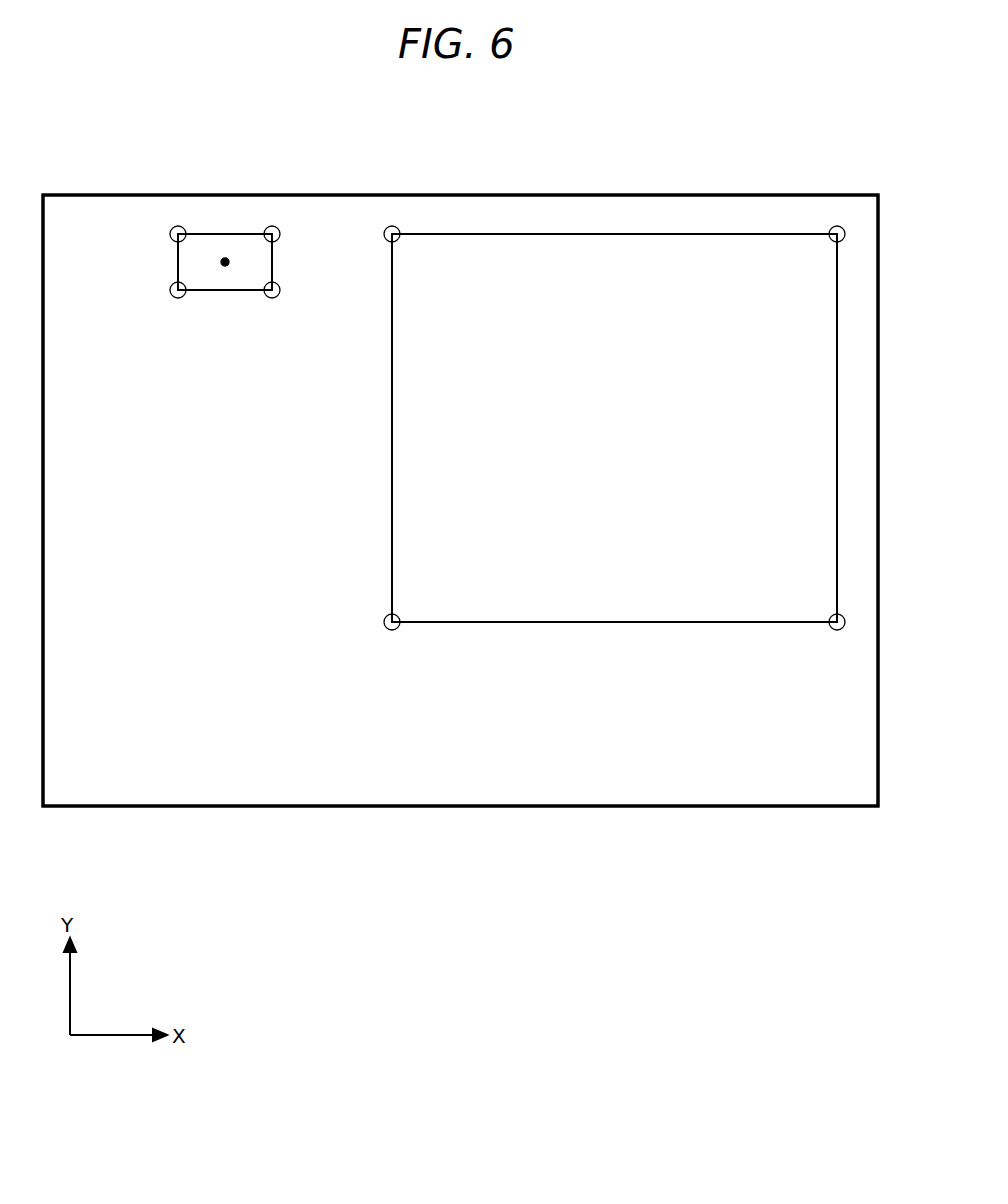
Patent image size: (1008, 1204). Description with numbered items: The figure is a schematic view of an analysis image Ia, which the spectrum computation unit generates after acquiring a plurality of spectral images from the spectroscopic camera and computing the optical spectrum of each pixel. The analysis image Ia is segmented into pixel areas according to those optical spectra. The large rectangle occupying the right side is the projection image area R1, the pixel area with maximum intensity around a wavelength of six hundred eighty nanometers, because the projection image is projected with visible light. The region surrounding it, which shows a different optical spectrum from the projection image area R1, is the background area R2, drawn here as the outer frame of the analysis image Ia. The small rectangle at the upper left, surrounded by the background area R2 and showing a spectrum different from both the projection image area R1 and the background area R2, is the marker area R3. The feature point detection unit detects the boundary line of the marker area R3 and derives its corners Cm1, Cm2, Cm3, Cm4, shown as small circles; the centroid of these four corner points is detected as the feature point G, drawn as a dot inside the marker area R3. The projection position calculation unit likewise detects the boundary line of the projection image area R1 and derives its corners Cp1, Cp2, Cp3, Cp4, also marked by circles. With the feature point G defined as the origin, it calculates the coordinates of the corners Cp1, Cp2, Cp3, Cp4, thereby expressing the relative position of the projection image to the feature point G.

The analysis image Ia is at (776, 194).
The projection image area R1 is at (647, 233).
The background area R2 is at (326, 194).
The marker area R3 is at (225, 234).
The corner of the projection image area boundary line Cp1 is at (392, 226).
The corner of the projection image area boundary line Cp2 is at (837, 226).
The corner of the projection image area boundary line Cp3 is at (837, 630).
The corner of the projection image area boundary line Cp4 is at (392, 630).
The corner of the marker area boundary line Cm1 is at (178, 226).
The corner of the marker area boundary line Cm2 is at (272, 226).
The corner of the marker area boundary line Cm3 is at (272, 298).
The corner of the marker area boundary line Cm4 is at (178, 298).
The feature point G is at (226, 267).